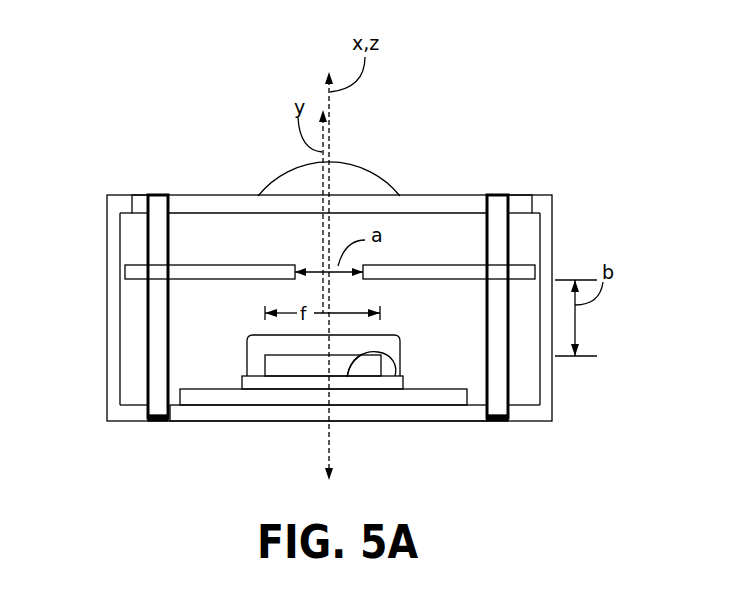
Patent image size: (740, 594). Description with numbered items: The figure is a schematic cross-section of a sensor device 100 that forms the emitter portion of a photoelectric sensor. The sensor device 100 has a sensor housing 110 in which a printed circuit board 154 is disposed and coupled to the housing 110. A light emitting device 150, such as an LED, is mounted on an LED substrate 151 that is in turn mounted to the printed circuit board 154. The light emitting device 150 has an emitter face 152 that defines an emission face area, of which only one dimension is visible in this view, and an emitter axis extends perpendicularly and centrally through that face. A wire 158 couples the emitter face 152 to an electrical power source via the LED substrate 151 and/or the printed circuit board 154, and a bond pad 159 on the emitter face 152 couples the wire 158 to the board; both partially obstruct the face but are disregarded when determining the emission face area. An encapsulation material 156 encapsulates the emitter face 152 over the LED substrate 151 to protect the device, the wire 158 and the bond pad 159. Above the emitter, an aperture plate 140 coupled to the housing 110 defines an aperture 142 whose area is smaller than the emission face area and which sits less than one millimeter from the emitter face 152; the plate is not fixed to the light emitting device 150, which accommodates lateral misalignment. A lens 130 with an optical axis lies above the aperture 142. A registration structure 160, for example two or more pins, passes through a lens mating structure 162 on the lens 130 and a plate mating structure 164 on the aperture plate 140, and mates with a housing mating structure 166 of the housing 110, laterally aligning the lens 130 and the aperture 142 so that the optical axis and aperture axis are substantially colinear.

The sensor device 100 is at (163, 89).
The sensor housing 110 is at (545, 237).
The lens 130 is at (393, 182).
The aperture plate 140 is at (233, 272).
The aperture 142 is at (238, 197).
The light emitting device 150 is at (394, 320).
The LED substrate 151 is at (242, 387).
The emitter face 152 is at (272, 352).
The printed circuit board 154 is at (225, 405).
The encapsulation material 156 is at (240, 367).
The wire 158 is at (398, 367).
The bond pad 159 is at (347, 360).
The registration structure 160 is at (157, 235).
The lens mating structure 162 is at (510, 200).
The plate mating structure 164 is at (510, 275).
The housing mating structure 166 is at (508, 418).